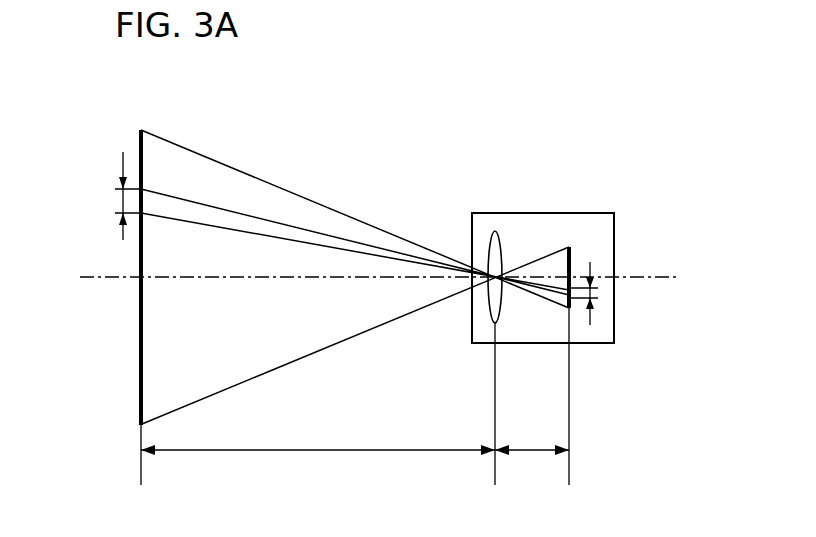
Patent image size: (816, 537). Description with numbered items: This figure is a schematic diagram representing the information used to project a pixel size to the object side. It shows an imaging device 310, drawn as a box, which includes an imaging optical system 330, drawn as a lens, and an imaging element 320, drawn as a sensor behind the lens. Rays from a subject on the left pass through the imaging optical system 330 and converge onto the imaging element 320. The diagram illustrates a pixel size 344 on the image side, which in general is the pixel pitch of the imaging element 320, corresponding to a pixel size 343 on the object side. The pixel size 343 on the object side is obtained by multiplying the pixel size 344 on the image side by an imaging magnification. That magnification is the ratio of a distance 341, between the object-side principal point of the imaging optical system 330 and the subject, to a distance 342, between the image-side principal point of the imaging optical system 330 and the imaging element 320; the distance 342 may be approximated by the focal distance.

The imaging device 310 is at (542, 213).
The imaging element 320 is at (572, 251).
The imaging optical system 330 is at (491, 233).
The distance between object-side principal point and subject 341 is at (318, 436).
The distance between image-side principal point and imaging element 342 is at (532, 436).
The pixel size on the object side 343 is at (116, 201).
The pixel size on the image side 344 is at (598, 296).